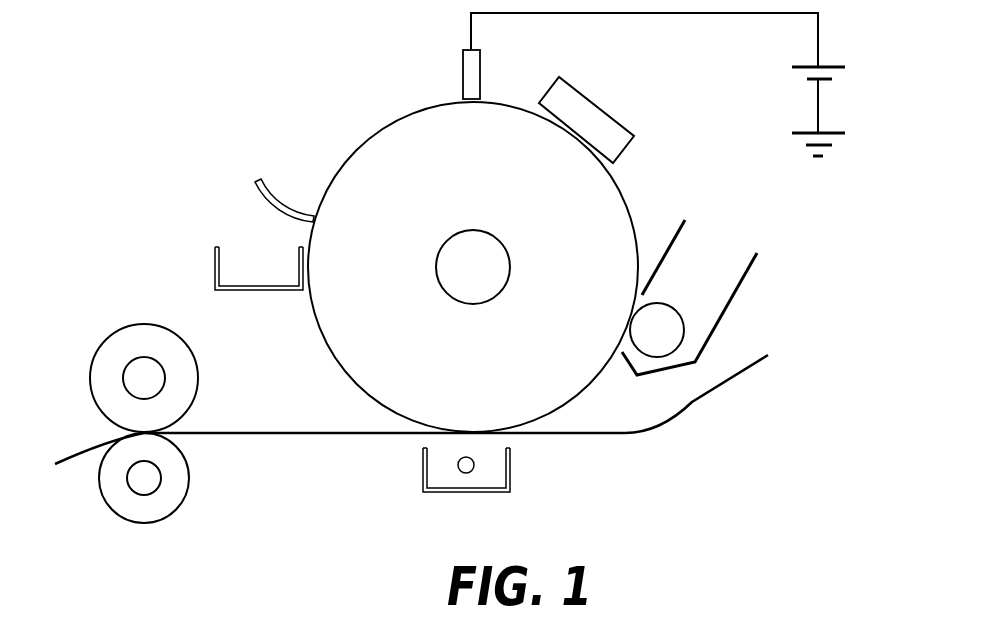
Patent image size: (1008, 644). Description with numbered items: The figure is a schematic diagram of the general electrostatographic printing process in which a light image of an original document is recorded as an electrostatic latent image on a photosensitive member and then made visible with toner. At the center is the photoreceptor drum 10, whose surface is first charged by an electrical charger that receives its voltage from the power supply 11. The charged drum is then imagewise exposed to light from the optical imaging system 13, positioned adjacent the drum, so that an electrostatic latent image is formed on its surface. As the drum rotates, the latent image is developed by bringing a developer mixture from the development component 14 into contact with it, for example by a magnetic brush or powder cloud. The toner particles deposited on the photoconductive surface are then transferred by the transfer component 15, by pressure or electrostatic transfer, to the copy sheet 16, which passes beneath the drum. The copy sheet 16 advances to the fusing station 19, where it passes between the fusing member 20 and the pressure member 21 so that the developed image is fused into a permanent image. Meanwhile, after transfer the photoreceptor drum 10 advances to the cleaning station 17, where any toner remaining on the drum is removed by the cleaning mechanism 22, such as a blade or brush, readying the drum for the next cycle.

The photoreceptor drum 10 is at (623, 202).
The power supply 11 is at (820, 40).
The optical imaging system 13 is at (598, 105).
The development component 14 is at (706, 258).
The transfer component 15 is at (510, 467).
The copy sheet 16 is at (703, 399).
The cleaning station 17 is at (228, 212).
The fusing station 19 is at (153, 399).
The fusing member 20 is at (199, 378).
The pressure member 21 is at (191, 478).
The cleaning mechanism 22 is at (283, 198).